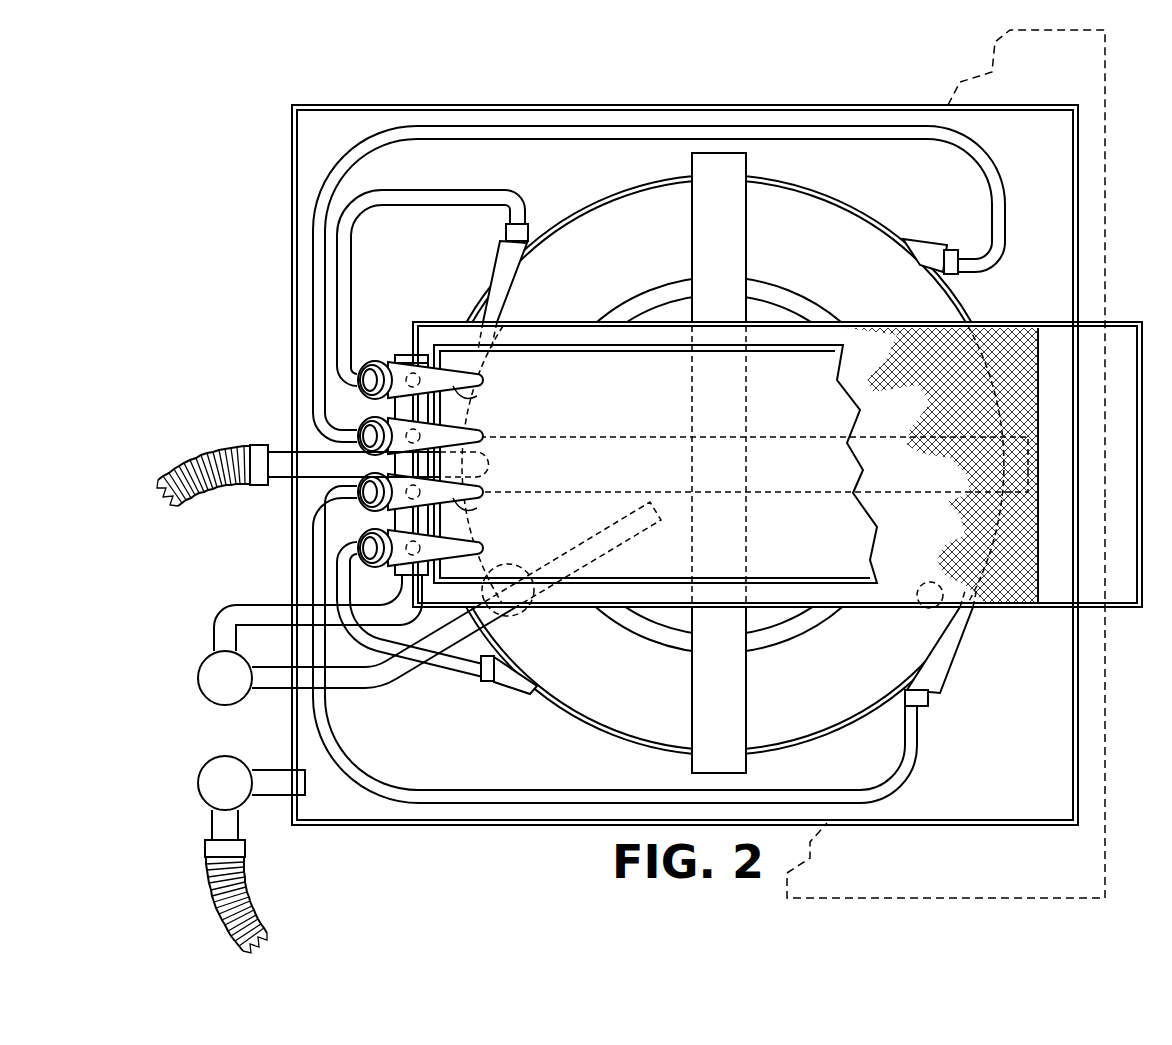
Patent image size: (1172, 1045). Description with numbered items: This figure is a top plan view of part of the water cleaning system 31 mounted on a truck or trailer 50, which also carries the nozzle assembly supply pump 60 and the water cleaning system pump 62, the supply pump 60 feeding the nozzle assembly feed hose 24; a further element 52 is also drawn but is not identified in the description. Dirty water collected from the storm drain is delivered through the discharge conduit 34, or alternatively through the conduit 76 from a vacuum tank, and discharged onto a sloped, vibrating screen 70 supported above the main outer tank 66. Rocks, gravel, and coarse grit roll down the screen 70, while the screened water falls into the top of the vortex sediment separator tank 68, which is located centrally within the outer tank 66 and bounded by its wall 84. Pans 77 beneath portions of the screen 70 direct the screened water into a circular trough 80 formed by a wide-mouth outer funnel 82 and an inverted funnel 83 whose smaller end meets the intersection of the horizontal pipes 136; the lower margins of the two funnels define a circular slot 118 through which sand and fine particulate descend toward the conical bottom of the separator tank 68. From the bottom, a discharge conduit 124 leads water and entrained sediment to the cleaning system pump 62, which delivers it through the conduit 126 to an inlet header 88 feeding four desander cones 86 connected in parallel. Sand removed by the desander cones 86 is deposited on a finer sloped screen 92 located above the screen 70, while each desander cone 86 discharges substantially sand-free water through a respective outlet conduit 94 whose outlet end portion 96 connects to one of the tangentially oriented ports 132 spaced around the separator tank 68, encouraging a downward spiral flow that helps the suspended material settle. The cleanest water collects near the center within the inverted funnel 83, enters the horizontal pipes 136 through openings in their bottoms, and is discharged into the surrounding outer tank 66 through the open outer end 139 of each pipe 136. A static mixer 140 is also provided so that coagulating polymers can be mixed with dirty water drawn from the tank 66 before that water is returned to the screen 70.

The nozzle assembly feed hose 24 is at (213, 900).
The water cleaning system 31 is at (258, 201).
The discharge conduit 34 is at (268, 450).
The truck or trailer 50 is at (1105, 178).
The cabinet 52 is at (828, 100).
The nozzle assembly supply pump 60 is at (198, 783).
The water cleaning system pump 62 is at (198, 680).
The outer tank 66 is at (1105, 715).
The vortex sediment separator tank 68 is at (597, 740).
The sloped screen 70 is at (955, 510).
The conduit 76 is at (488, 465).
The pans 77 is at (520, 610).
The circular trough 80 is at (820, 222).
The outer funnel 82 is at (856, 290).
The inverted funnel 83 is at (762, 305).
The wall of the vortex separator tank 84 is at (496, 365).
The desander cones 86 is at (480, 392).
The inlet header 88 is at (400, 352).
The sloped screen 92 is at (590, 345).
The outlet conduit 94 is at (337, 340).
The outlet end portion 96 is at (515, 222).
The circular slot 118 is at (805, 312).
The discharge conduit 124 is at (605, 570).
The conduit 126 is at (236, 606).
The tangentially oriented ports 132 is at (500, 250).
The horizontal pipes 136 is at (690, 250).
The open outer end 139 is at (746, 773).
The static mixer 140 is at (268, 770).